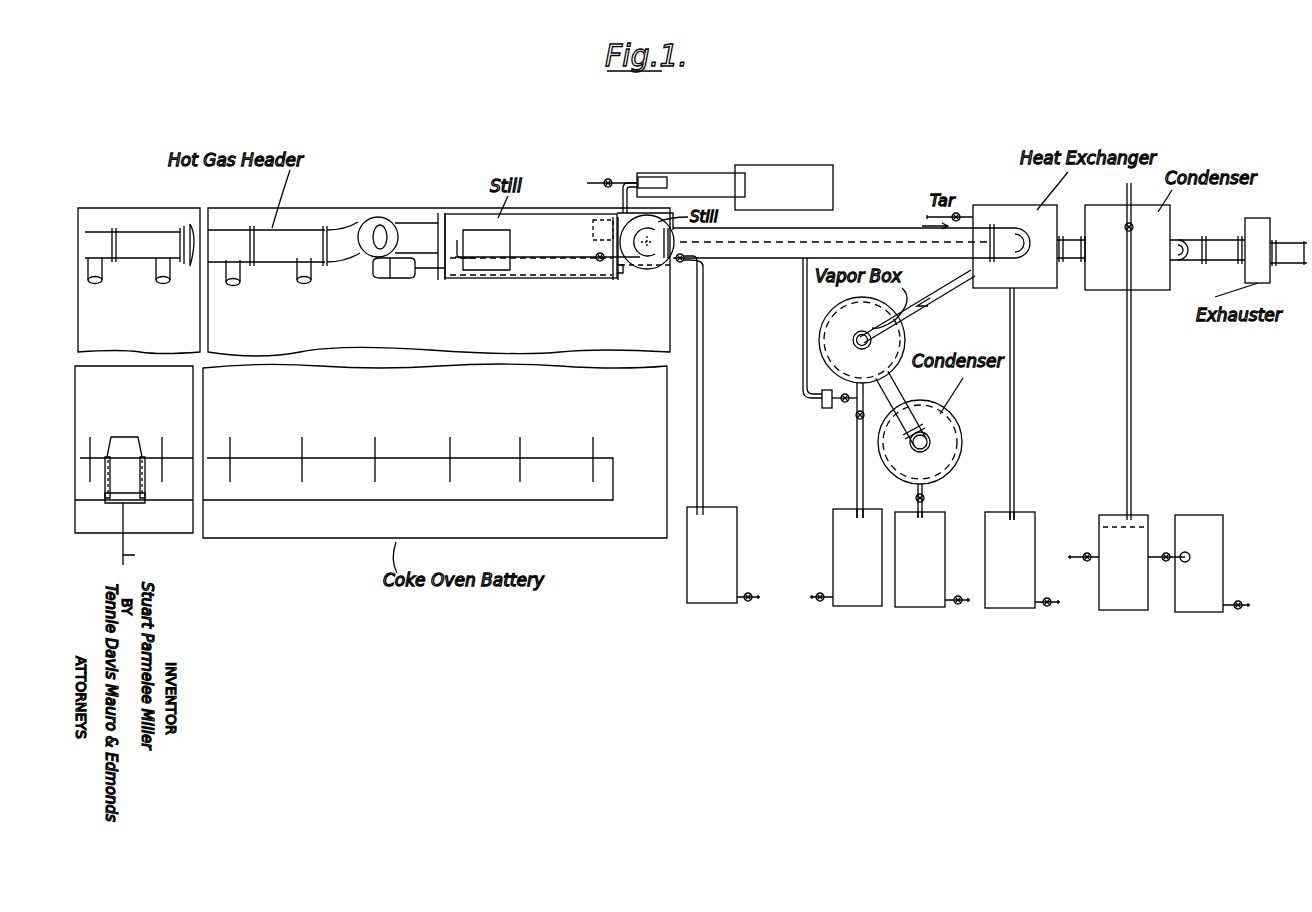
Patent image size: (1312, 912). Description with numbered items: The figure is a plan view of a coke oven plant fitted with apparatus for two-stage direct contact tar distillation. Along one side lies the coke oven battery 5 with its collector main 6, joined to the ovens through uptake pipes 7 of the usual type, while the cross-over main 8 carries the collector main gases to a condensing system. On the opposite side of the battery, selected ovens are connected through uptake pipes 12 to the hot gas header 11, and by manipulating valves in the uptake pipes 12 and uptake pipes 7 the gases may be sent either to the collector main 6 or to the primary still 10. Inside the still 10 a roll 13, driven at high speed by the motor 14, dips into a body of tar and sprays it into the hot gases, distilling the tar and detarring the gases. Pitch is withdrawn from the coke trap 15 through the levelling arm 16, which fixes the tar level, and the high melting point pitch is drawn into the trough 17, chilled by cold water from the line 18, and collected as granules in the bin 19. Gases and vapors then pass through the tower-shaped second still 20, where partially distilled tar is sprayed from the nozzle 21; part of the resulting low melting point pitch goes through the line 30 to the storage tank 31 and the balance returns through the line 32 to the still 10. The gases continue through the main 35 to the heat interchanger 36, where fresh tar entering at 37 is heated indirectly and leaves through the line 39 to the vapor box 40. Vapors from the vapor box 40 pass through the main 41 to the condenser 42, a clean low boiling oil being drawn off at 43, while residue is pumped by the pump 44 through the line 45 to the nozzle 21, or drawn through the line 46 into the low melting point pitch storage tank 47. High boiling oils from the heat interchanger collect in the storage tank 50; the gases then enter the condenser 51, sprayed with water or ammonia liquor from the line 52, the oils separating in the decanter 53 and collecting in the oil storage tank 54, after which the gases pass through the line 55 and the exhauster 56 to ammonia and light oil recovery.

The coke oven battery 5 is at (570, 535).
The collector main 6 is at (322, 500).
The uptake pipes 7 is at (448, 442).
The cross-over main 8 is at (134, 466).
The still 10 is at (456, 214).
The hot gas header 11 is at (116, 238).
The uptake pipes 12 is at (302, 270).
The roll 13 is at (494, 280).
The motor 14 is at (397, 270).
The coke trap 15 is at (623, 213).
The levelling arm 16 is at (652, 177).
The trough 17 is at (706, 173).
The line 18 is at (601, 180).
The bin 19 is at (770, 165).
The second still 20 is at (651, 270).
The nozzle 21 is at (626, 275).
The line 30 is at (704, 430).
The storage tank 31 is at (730, 506).
The line 32 is at (578, 270).
The main 35 is at (868, 242).
The heat interchanger 36 is at (1035, 282).
The tar inlet 37 is at (917, 213).
The line 39 is at (948, 288).
The vapor box 40 is at (898, 334).
The main 41 is at (898, 388).
The condenser 42 is at (948, 430).
The oil draw-off 43 is at (926, 490).
The pump 44 is at (824, 410).
The line 45 is at (798, 348).
The line 46 is at (855, 478).
The low melting point pitch storage tank 47 is at (832, 526).
The storage tank 50 is at (1030, 514).
The condenser 51 is at (1130, 351).
The line 52 is at (1135, 245).
The decanter 53 is at (1140, 515).
The oil storage tank 54 is at (1212, 516).
The line 55 is at (1216, 260).
The exhauster 56 is at (1262, 226).